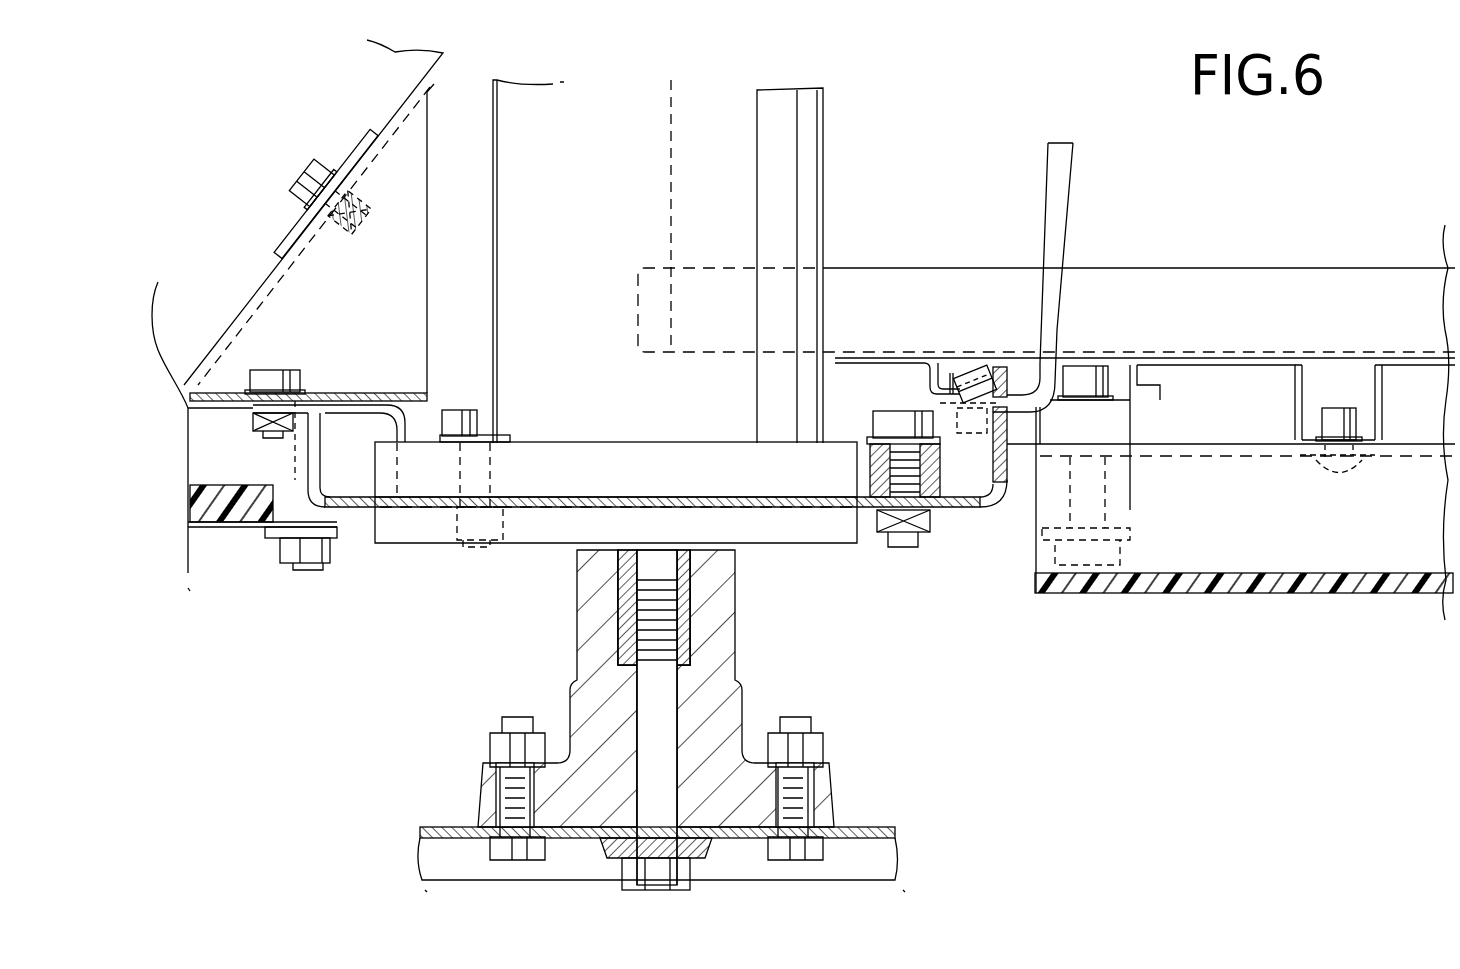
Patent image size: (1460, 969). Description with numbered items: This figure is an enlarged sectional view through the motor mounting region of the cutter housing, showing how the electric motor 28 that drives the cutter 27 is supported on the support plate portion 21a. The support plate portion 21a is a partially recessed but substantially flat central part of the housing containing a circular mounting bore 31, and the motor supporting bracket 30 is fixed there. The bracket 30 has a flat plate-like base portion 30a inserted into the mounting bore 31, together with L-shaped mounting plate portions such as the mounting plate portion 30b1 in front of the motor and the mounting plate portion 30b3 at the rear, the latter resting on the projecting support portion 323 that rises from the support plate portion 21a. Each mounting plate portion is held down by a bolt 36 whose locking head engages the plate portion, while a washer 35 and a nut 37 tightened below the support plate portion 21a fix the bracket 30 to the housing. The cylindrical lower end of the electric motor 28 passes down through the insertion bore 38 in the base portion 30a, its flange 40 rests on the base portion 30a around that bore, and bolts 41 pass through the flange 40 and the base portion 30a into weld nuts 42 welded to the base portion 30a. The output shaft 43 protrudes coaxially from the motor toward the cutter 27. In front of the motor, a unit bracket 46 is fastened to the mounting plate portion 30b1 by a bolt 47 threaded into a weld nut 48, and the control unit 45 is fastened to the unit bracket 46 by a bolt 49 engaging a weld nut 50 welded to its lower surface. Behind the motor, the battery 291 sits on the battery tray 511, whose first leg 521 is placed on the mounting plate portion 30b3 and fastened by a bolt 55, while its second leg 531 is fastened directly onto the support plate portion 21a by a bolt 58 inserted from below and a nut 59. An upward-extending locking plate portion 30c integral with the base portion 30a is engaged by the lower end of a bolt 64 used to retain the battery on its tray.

The support plate portion 21a is at (1228, 450).
The cutter 27 is at (872, 827).
The electric motor 28 is at (618, 207).
The battery 291 is at (1298, 207).
The motor supporting bracket 30 is at (432, 516).
The base portion 30a is at (405, 400).
The mounting plate portion 30b1 is at (235, 347).
The mounting plate portion 30b3 is at (1156, 398).
The locking plate portion 30c is at (1005, 372).
The mounting bore 31 is at (293, 493).
The projecting support portion 323 is at (1206, 396).
The washer 35 is at (278, 540).
The bolt 36 is at (322, 572).
The nut 37 is at (284, 556).
The insertion bore 38 is at (850, 502).
The flange 40 is at (648, 462).
The bolt 41 is at (470, 415).
The weld nut 42 is at (503, 524).
The output shaft 43 is at (620, 630).
The control unit 45 is at (180, 385).
The unit bracket 46 is at (400, 264).
The bolt 47 is at (283, 370).
The weld nut 48 is at (258, 421).
The bolt 49 is at (300, 167).
The weld nut 50 is at (378, 180).
The battery tray 511 is at (1325, 268).
The first leg 521 is at (945, 360).
The second leg 531 is at (1382, 392).
The bolt 55 is at (985, 372).
The bolt 58 is at (1329, 472).
The nut 59 is at (1363, 423).
The bolt 64 is at (1062, 178).